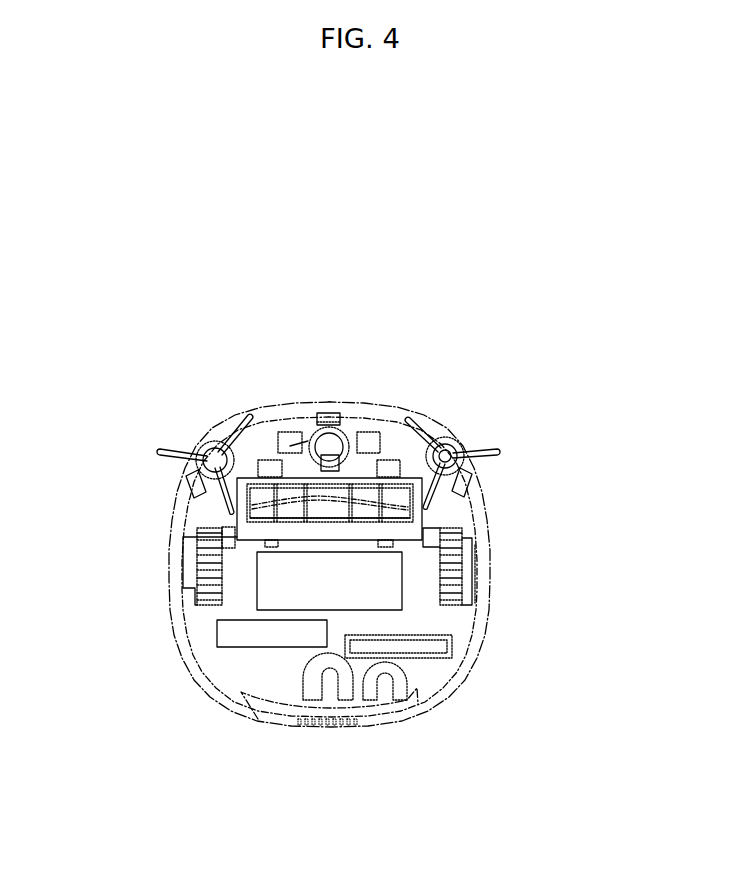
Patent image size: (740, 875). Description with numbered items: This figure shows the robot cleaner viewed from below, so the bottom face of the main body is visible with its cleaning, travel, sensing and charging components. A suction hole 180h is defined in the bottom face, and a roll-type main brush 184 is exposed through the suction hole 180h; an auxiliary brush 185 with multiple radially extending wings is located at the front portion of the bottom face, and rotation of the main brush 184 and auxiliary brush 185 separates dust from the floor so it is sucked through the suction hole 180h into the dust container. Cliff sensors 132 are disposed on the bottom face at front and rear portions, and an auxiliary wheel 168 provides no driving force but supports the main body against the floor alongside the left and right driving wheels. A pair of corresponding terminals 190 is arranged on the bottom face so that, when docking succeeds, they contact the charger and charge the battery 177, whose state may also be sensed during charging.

The cliff sensor 132 is at (325, 413).
The auxiliary brush 185 is at (160, 452).
The suction hole 180h is at (263, 513).
The main brush 184 is at (437, 472).
The battery 177 is at (433, 647).
The auxiliary wheel 168 is at (328, 683).
The corresponding terminal 190 is at (385, 470).